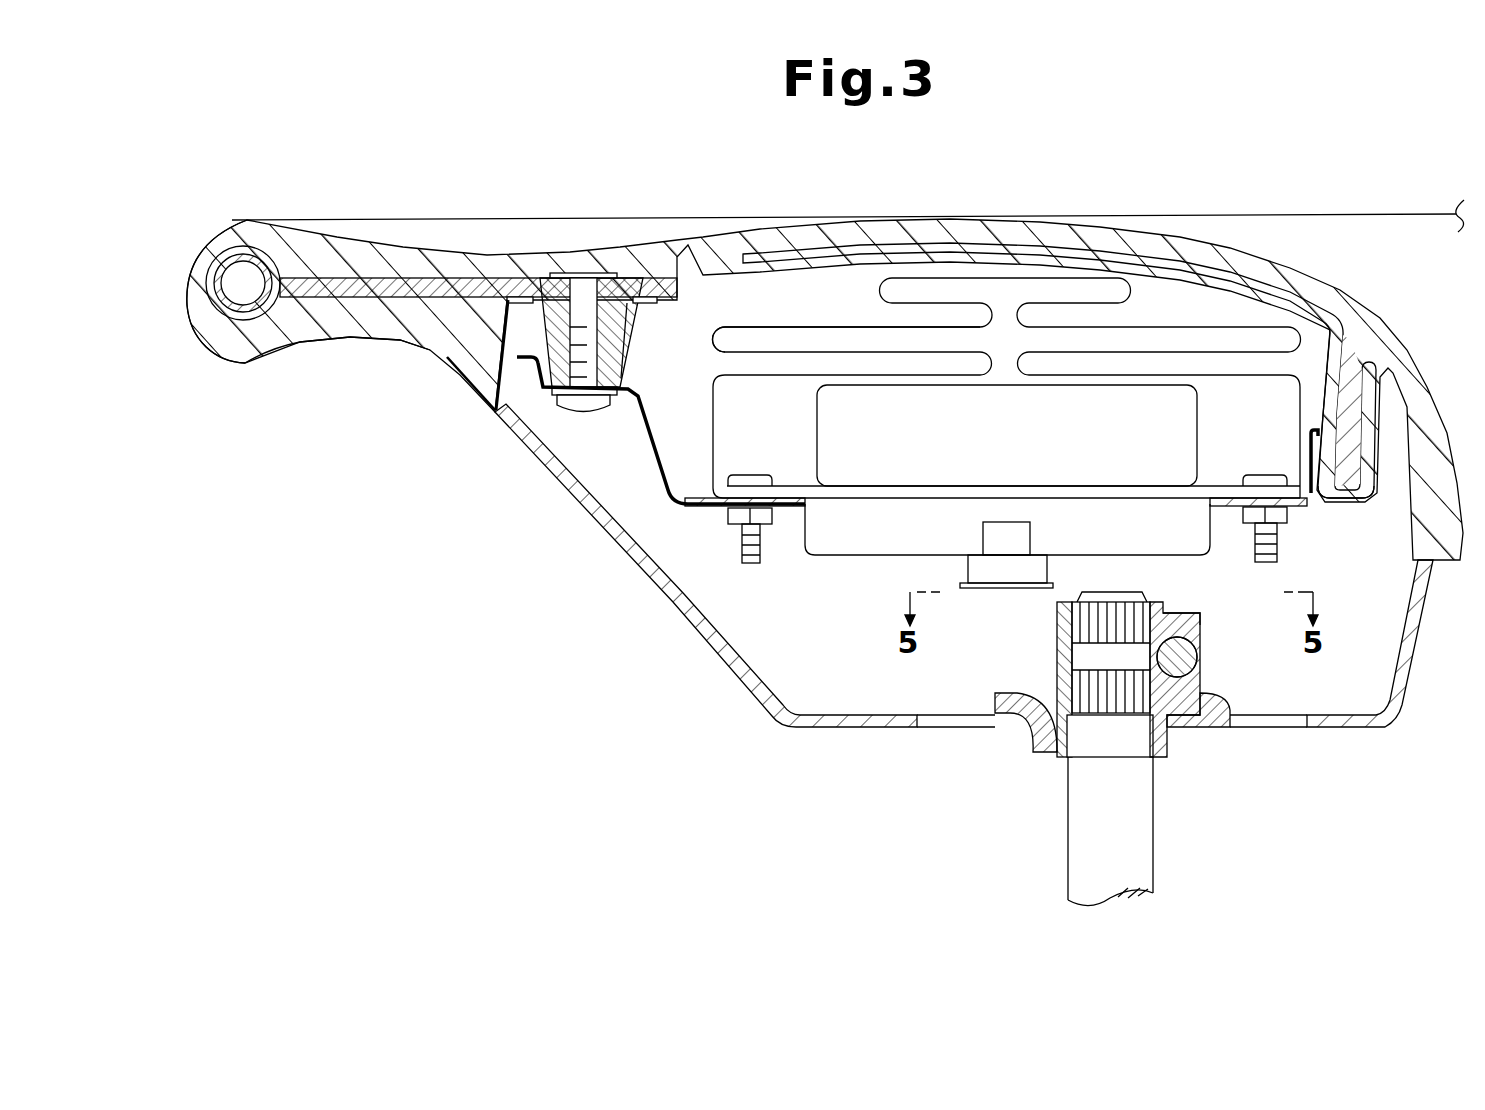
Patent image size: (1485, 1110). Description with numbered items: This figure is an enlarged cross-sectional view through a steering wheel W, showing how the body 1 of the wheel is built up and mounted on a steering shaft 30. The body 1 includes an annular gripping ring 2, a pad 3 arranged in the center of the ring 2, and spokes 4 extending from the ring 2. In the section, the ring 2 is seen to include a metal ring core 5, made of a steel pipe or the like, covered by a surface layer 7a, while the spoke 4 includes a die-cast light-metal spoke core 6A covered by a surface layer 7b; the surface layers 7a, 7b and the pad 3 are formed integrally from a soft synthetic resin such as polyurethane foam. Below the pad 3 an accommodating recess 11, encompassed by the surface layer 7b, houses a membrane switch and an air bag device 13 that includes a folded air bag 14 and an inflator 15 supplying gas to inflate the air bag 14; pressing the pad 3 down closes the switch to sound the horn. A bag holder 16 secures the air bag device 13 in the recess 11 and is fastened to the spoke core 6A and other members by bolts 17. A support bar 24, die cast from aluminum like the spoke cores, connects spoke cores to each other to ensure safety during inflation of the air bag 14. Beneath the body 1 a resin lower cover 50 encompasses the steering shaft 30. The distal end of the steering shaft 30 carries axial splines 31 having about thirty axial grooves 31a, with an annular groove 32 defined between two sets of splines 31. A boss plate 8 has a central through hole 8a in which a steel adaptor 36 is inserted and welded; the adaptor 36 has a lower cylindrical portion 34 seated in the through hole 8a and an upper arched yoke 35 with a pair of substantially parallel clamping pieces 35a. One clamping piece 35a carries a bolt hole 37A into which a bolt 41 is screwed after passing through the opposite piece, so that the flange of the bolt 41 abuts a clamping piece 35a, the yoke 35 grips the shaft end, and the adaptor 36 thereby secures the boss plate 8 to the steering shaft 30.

The body 1 is at (592, 209).
The gripping ring 2 is at (223, 222).
The pad 3 is at (1040, 217).
The spokes 4 is at (387, 338).
The ring core 5 is at (192, 258).
The spoke core 6A is at (337, 300).
The surface layer 7a is at (190, 340).
The surface layer 7b is at (450, 357).
The boss plate 8 is at (1013, 735).
The through hole 8a is at (1160, 757).
The accommodating recess 11 is at (829, 298).
The air bag device 13 is at (840, 577).
The air bag 14 is at (737, 327).
The inflator 15 is at (817, 423).
The bag holder 16 is at (651, 440).
The bolts 17 is at (574, 407).
The support bar 24 is at (1352, 494).
The steering shaft 30 is at (1155, 853).
The splines 31 is at (1083, 693).
The axial grooves 31a is at (1033, 657).
The annular groove 32 is at (1108, 660).
The cylindrical portion 34 is at (1057, 760).
The yoke 35 is at (1063, 610).
The clamping pieces 35a is at (1173, 622).
The adaptor 36 is at (1040, 608).
The bolt hole 37A is at (1195, 653).
The bolt 41 is at (1190, 660).
The lower cover 50 is at (780, 730).
The steering wheel W is at (888, 209).